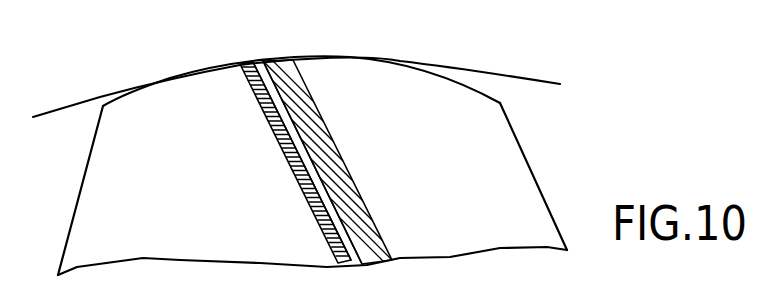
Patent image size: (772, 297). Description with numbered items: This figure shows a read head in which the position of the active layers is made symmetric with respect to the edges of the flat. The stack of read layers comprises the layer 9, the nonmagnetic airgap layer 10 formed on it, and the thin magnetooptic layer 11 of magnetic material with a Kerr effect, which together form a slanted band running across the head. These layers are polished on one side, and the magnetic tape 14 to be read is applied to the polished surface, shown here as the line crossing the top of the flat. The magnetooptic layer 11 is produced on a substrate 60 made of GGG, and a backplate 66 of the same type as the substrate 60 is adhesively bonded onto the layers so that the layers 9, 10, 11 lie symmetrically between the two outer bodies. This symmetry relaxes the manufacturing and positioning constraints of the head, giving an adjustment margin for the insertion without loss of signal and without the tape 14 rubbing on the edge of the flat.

The layer 9 is at (288, 82).
The layer of nonmagnetic material 10 is at (262, 80).
The thin layer of magnetic material 11 is at (243, 82).
The magnetic tape 14 is at (100, 97).
The substrate 60 is at (100, 190).
The backplate 66 is at (498, 148).